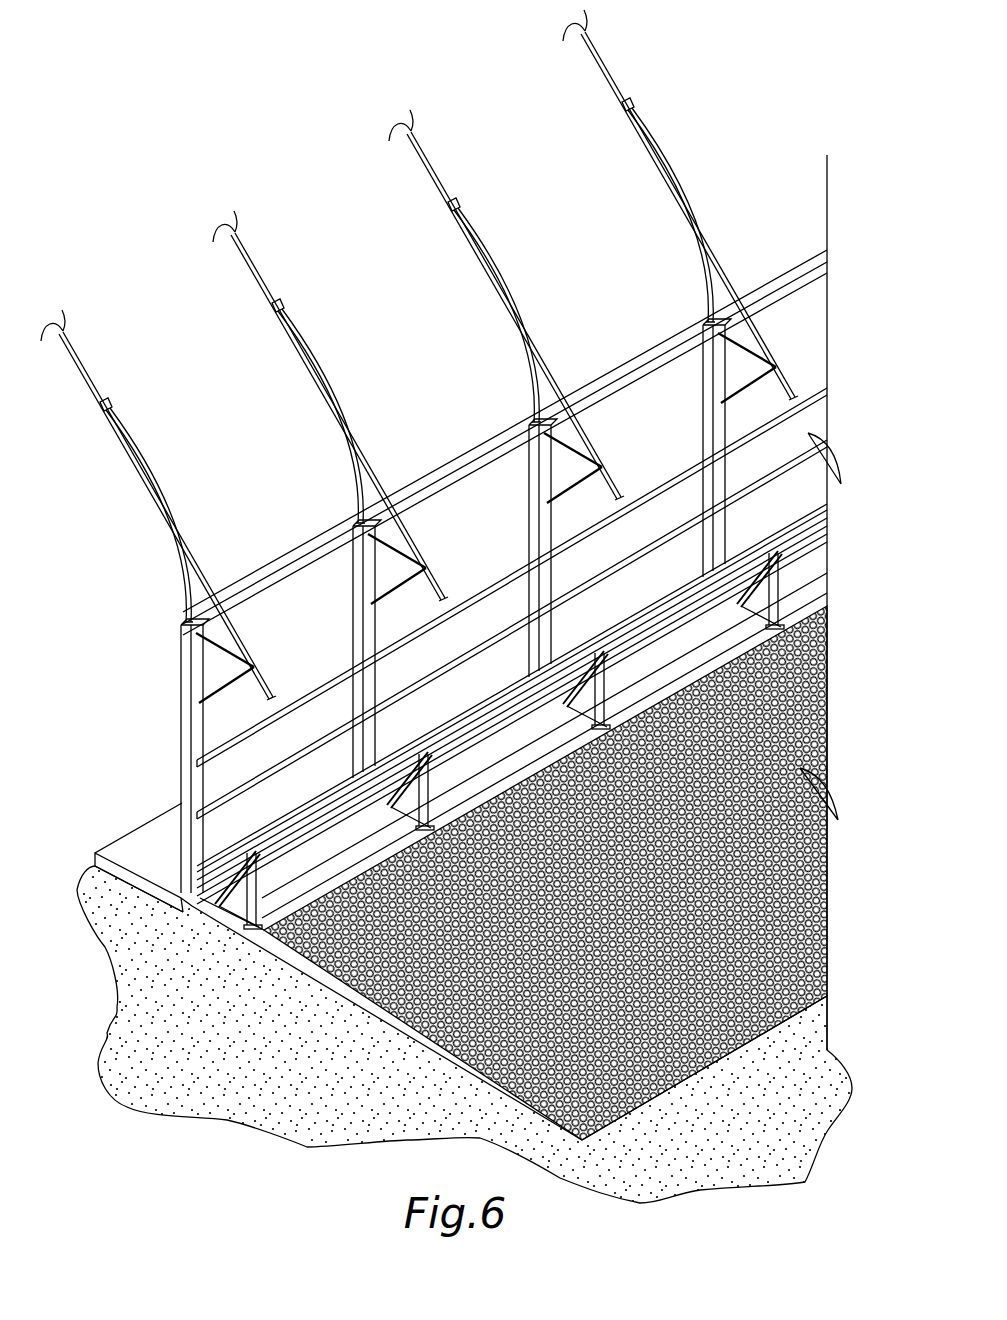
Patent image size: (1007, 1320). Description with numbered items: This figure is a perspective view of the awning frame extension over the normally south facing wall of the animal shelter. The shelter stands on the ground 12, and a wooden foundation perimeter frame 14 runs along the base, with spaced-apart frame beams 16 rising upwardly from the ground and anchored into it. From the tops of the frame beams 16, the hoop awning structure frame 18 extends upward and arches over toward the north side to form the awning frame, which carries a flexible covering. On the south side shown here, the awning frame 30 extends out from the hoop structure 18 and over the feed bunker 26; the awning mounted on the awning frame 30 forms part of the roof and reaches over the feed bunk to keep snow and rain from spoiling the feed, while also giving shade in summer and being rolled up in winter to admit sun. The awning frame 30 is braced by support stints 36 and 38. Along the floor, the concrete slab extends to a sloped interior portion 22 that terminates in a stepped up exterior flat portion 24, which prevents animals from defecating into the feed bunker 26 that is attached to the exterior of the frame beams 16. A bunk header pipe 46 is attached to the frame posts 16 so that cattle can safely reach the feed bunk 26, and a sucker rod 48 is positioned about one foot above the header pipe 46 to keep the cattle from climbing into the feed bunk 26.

The ground 12 is at (125, 1035).
The wooden foundation perimeter frame 14 is at (326, 796).
The frame beams 16 is at (180, 713).
The hoop awning structure frame 18 is at (73, 353).
The sloped interior portion 22 is at (119, 848).
The stepped up exterior flat portion 24 is at (218, 889).
The feed bunker 26 is at (818, 568).
The awning frame 30 is at (190, 549).
The support stint 36 is at (206, 656).
The support stint 38 is at (214, 688).
The bunk header pipe 46 is at (192, 815).
The sucker rod 48 is at (191, 764).